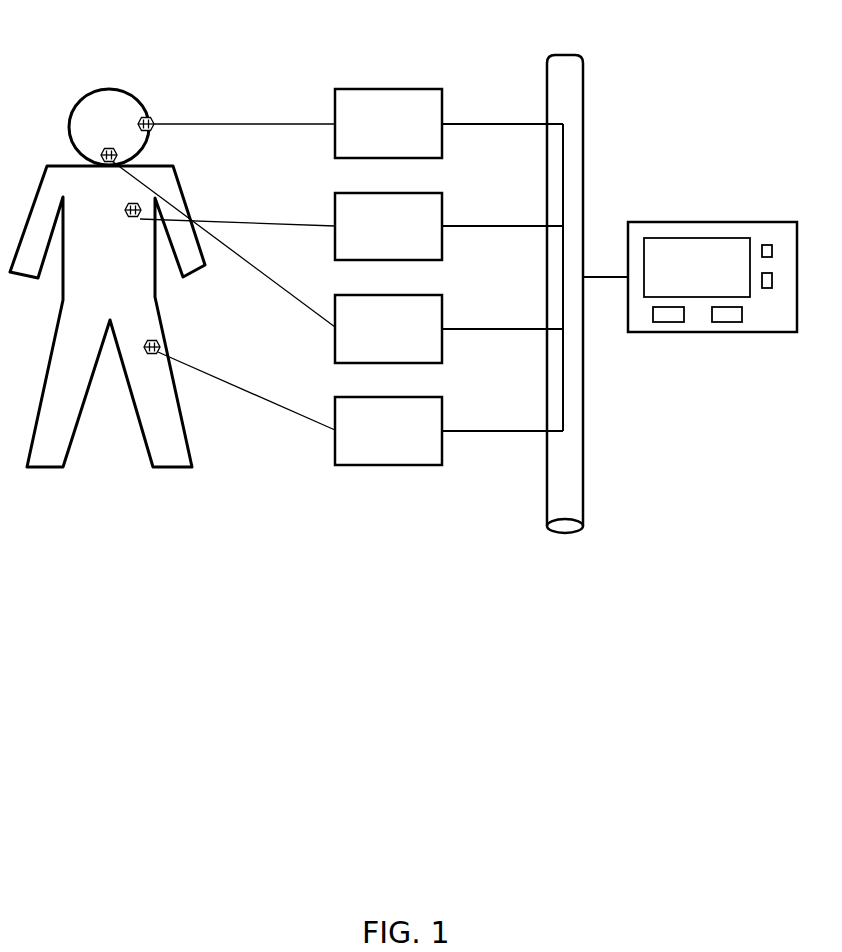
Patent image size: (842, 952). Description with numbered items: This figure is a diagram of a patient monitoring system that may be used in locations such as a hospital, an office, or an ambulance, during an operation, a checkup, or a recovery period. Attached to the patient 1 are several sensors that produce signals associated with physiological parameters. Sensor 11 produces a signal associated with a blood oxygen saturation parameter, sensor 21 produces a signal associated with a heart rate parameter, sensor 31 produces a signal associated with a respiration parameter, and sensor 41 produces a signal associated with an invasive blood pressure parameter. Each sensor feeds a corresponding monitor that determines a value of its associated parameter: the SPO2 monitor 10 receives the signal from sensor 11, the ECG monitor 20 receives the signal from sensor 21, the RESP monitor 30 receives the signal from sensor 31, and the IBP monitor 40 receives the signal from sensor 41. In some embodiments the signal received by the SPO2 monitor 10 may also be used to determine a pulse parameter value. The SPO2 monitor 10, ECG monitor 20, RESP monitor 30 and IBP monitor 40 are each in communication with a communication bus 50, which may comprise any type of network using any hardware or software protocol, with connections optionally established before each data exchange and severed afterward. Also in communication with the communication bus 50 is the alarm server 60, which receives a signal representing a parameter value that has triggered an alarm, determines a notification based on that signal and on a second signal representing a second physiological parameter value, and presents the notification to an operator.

The patient 1 is at (121, 93).
The sensor 11 is at (151, 117).
The sensor 21 is at (124, 205).
The sensor 31 is at (105, 149).
The sensor 41 is at (161, 343).
The blood oxygen saturation level (SPO2) monitor 10 is at (436, 151).
The electrocardiogram (ECG) monitor 20 is at (436, 253).
The respiration (RESP) monitor 30 is at (436, 357).
The invasive blood pressure (IBP) monitor 40 is at (436, 460).
The communication bus 50 is at (563, 54).
The alarm server 60 is at (713, 221).